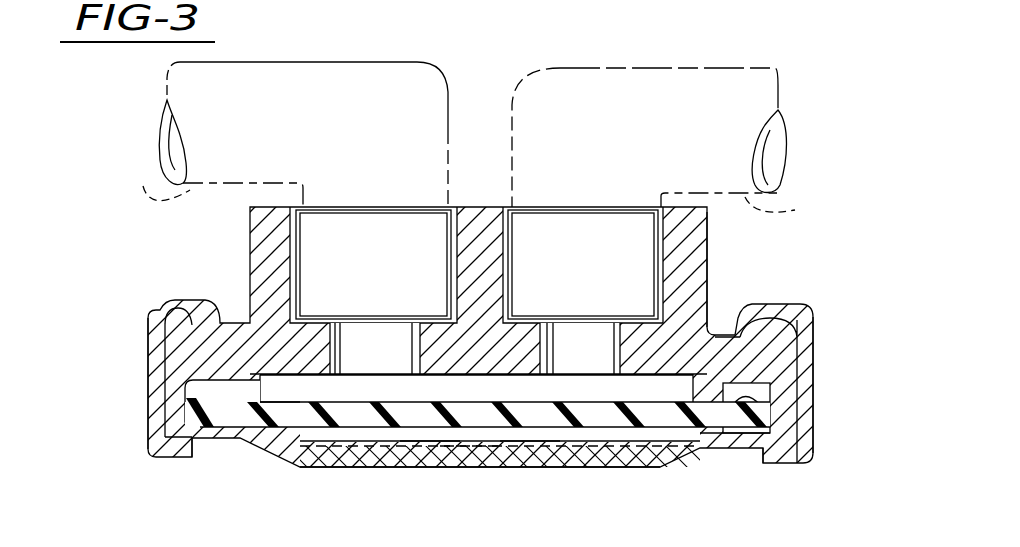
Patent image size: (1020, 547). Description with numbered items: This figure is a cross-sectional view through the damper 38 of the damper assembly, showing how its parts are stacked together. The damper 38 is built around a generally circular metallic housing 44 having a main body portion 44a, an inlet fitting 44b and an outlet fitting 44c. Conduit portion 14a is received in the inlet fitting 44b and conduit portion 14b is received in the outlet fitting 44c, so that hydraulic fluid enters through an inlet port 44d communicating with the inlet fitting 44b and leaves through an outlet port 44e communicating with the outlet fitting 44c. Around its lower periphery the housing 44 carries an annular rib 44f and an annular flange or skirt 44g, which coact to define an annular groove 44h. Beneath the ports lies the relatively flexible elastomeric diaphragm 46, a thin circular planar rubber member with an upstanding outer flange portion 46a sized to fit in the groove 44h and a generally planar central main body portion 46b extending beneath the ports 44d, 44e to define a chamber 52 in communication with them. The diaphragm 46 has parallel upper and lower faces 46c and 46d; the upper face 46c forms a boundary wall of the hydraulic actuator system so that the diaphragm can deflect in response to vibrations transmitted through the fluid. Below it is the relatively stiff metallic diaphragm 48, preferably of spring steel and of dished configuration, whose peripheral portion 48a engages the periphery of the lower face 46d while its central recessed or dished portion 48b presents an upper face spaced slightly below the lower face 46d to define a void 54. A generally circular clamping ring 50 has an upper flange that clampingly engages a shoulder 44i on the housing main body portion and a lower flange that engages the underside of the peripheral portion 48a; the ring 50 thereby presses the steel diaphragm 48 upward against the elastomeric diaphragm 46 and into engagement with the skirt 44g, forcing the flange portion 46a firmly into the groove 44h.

The conduit portion 14a is at (160, 190).
The conduit portion 14b is at (795, 210).
The damper 38 is at (128, 368).
The housing 44 is at (250, 272).
The main body portion 44a is at (700, 272).
The inlet fitting 44b is at (297, 233).
The outlet fitting 44c is at (660, 233).
The inlet port 44d is at (333, 343).
The outlet port 44e is at (605, 338).
The annular rib 44f is at (708, 443).
The annular flange or skirt 44g is at (792, 438).
The annular groove 44h is at (810, 390).
The shoulder 44i is at (168, 330).
The elastomeric diaphragm 46 is at (631, 440).
The outer flange portion 46a is at (200, 400).
The central main body portion 46b is at (533, 422).
The upper face 46c is at (445, 395).
The lower face 46d is at (470, 432).
The metallic diaphragm 48 is at (373, 466).
The peripheral portion 48a is at (190, 428).
The central recessed or dished portion 48b is at (558, 442).
The clamping ring 50 is at (813, 388).
The chamber 52 is at (312, 398).
The void 54 is at (335, 440).